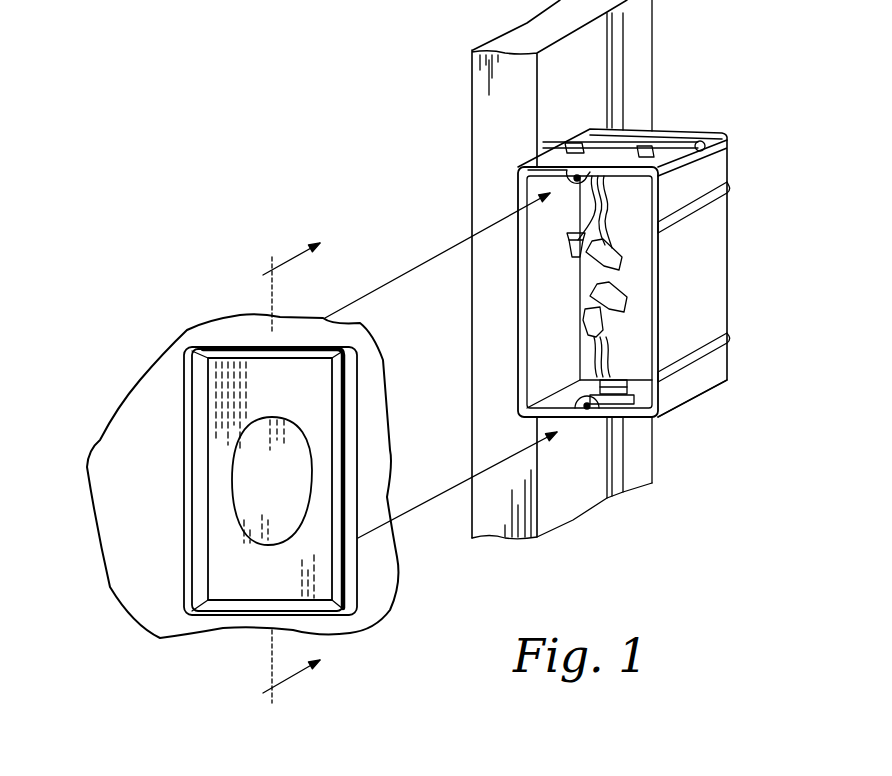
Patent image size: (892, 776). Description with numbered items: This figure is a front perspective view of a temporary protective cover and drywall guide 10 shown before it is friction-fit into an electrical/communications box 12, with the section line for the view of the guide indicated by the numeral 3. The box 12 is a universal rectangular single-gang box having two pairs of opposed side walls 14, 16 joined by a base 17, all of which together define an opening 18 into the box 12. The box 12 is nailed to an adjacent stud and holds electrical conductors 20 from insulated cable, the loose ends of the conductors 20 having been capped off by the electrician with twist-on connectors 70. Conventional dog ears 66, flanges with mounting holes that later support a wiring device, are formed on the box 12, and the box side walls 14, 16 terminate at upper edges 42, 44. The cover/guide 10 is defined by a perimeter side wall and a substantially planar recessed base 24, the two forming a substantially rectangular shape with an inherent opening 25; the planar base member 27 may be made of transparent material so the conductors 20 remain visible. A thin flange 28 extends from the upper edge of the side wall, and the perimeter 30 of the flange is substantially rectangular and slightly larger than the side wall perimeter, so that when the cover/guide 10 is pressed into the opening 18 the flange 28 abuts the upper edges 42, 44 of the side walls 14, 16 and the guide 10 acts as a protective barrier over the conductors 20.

The temporary protective cover and drywall guide 10 is at (242, 426).
The electrical/communications box 12 is at (611, 284).
The side walls 14 is at (710, 255).
The side walls 16 is at (680, 137).
The base 17 is at (655, 406).
The opening 18 is at (625, 212).
The electrical conductors 20 is at (575, 205).
The planar base 24 is at (285, 501).
The inherent opening 25 is at (315, 555).
The planar base member 27 is at (232, 500).
The thin flange 28 is at (190, 540).
The perimeter of the flange 30 is at (327, 318).
The upper edges 42 is at (658, 302).
The upper edges 44 is at (540, 168).
The dog ears 66 is at (573, 175).
The twist-on connectors 70 is at (566, 258).
The section line 3- 3 is at (291, 468).